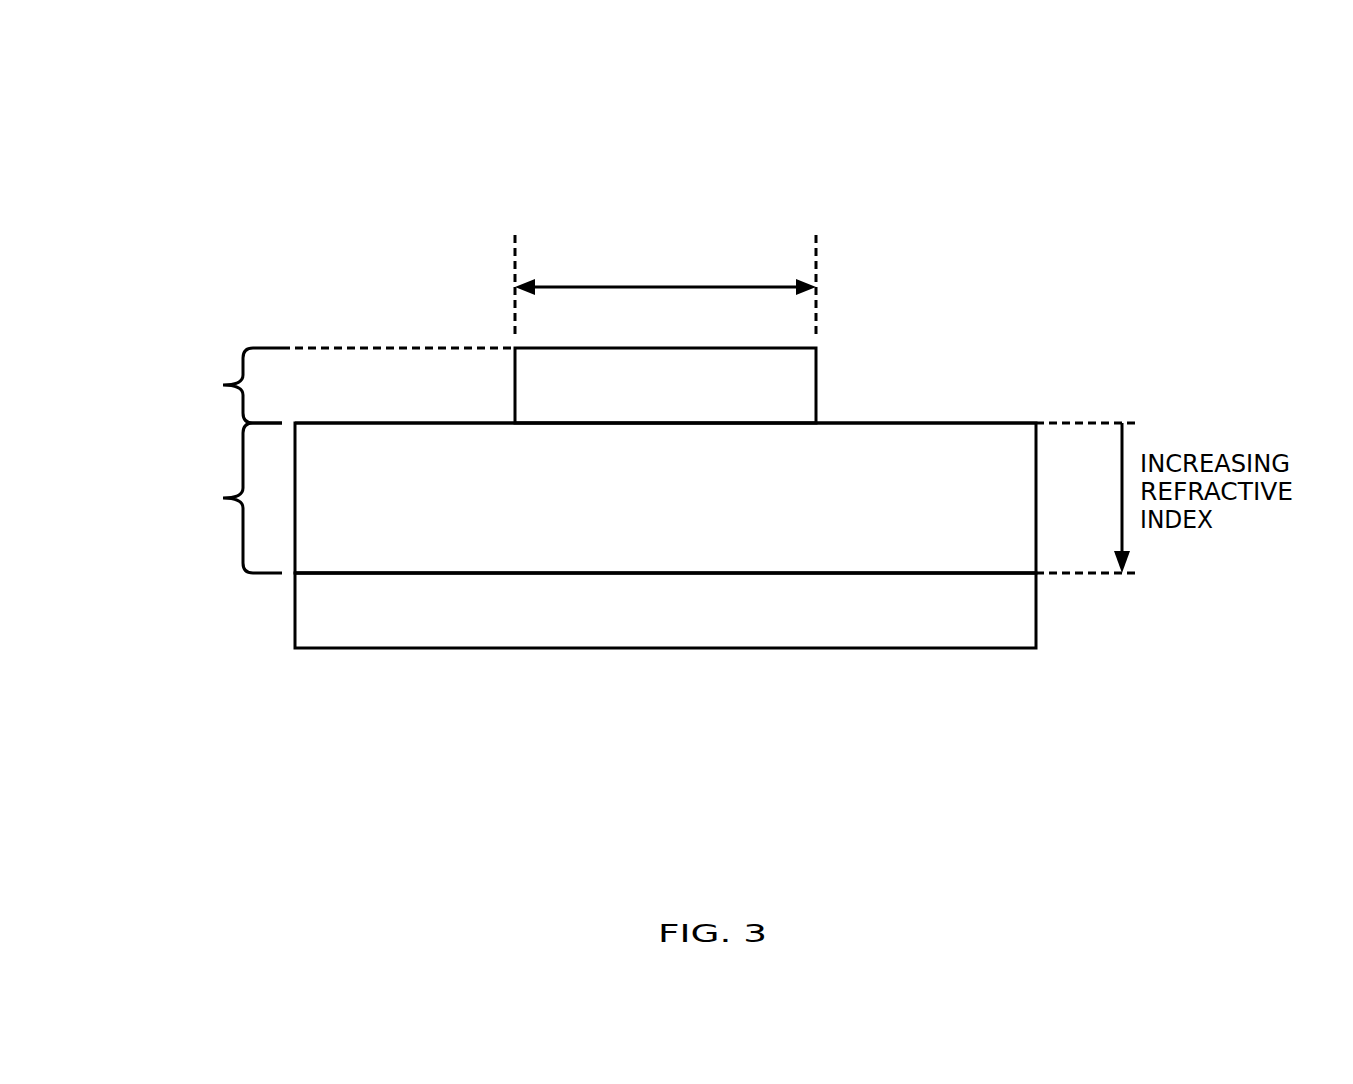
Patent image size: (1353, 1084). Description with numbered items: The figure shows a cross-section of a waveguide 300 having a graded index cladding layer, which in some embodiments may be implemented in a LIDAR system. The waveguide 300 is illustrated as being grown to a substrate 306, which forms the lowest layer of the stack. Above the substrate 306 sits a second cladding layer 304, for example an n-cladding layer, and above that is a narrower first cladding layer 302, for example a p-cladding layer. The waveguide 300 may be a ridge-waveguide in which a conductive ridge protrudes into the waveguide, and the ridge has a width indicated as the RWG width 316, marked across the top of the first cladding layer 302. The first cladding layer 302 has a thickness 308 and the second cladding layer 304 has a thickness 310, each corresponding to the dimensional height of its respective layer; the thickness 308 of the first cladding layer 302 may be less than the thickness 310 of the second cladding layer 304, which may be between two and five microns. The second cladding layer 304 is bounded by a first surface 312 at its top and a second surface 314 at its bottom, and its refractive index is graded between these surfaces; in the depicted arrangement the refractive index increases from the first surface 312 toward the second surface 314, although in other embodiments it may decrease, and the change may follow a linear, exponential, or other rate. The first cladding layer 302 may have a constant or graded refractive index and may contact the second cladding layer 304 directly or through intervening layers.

The waveguide 300 is at (1245, 110).
The first cladding layer 302 is at (665, 385).
The second cladding layer 304 is at (665, 498).
The substrate 306 is at (665, 610).
The thickness 308 is at (293, 385).
The thickness 310 is at (177, 498).
The first surface 312 is at (1028, 414).
The second surface 314 is at (1008, 586).
The RWG width 316 is at (665, 279).